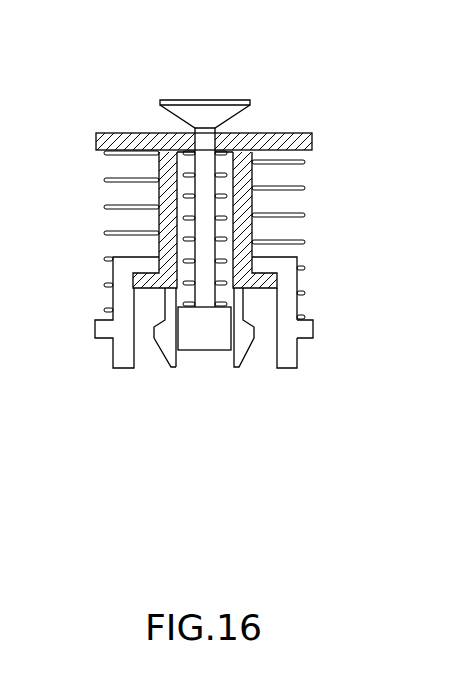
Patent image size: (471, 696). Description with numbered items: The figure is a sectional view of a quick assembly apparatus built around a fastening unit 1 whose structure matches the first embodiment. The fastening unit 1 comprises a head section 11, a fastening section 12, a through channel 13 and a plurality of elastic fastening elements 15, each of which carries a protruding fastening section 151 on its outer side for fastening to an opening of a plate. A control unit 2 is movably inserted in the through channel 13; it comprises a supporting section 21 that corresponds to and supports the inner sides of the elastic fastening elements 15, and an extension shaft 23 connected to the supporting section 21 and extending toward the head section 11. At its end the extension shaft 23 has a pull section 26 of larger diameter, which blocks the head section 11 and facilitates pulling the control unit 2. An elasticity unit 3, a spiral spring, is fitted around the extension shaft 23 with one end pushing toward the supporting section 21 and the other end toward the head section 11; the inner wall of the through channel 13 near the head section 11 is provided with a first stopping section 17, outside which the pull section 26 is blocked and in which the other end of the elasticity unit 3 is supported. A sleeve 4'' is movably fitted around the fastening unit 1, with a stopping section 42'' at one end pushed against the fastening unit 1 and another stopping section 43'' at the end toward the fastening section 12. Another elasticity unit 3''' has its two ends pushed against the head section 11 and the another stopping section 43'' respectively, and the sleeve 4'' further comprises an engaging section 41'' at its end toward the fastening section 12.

The fastening unit 1 is at (149, 192).
The control unit 2 is at (252, 98).
The elasticity unit 3 is at (250, 216).
The head section 11 is at (105, 142).
The fastening section 12 is at (171, 366).
The through channel 13 is at (180, 222).
The elastic fastening elements 15 is at (158, 358).
The first stopping section 17 is at (190, 145).
The supporting section 21 is at (210, 338).
The extension shaft 23 is at (205, 168).
The pull section 26 is at (202, 113).
The stopping section 42'' is at (324, 214).
The sleeve 4'' is at (341, 268).
The another elasticity unit 3''' is at (365, 292).
The another stopping section 43'' is at (365, 345).
The engaging section 41'' is at (340, 354).
The protruding fastening section 151 is at (160, 328).